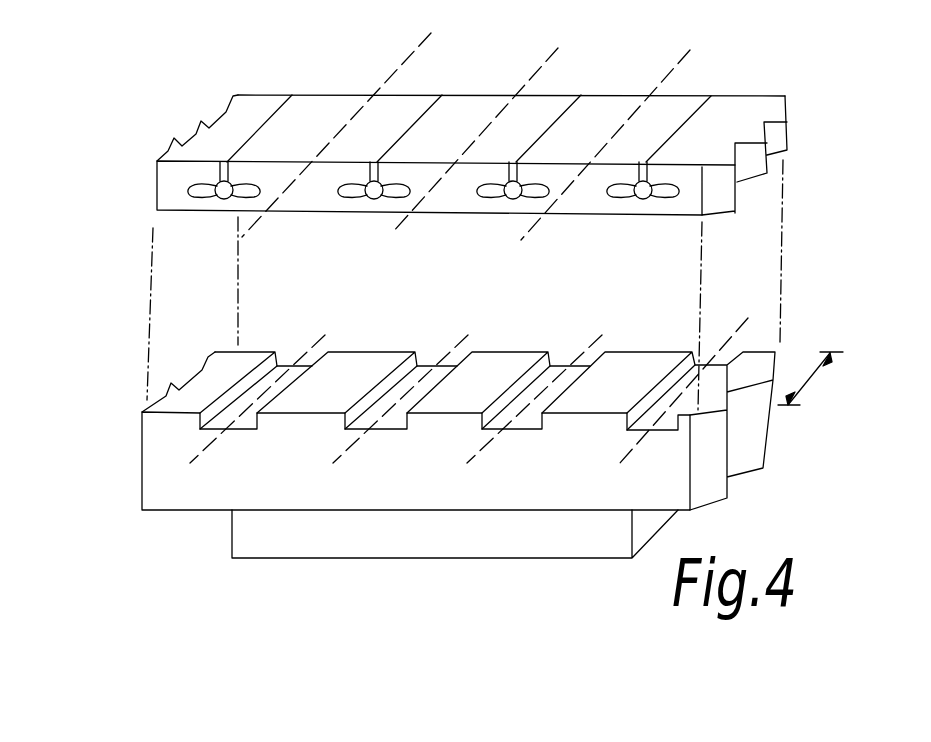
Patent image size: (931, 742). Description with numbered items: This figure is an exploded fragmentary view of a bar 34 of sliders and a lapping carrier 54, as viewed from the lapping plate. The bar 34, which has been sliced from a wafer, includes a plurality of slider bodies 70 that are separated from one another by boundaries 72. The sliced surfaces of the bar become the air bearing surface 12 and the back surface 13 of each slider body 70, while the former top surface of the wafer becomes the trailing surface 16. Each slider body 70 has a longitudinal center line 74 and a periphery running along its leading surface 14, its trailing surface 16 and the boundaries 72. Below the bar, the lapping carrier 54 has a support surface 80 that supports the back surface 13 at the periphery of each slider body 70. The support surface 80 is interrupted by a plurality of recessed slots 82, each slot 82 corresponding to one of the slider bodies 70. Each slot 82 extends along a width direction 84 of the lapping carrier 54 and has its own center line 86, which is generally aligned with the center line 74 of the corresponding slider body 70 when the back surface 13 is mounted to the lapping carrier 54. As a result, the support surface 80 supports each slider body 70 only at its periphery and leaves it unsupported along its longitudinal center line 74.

The air bearing surface 12 is at (222, 124).
The back surface 13 is at (181, 212).
The leading surface 14 is at (248, 94).
The trailing surface 16 is at (172, 172).
The bar 34 is at (428, 123).
The lapping carrier 54 is at (460, 427).
The slider body 70 is at (332, 110).
The boundary 72 is at (418, 48).
The longitudinal center line 74 is at (280, 105).
The support surface 80 is at (190, 390).
The recessed slot 82 is at (235, 432).
The width direction 84 is at (810, 378).
The center line 86 is at (337, 322).